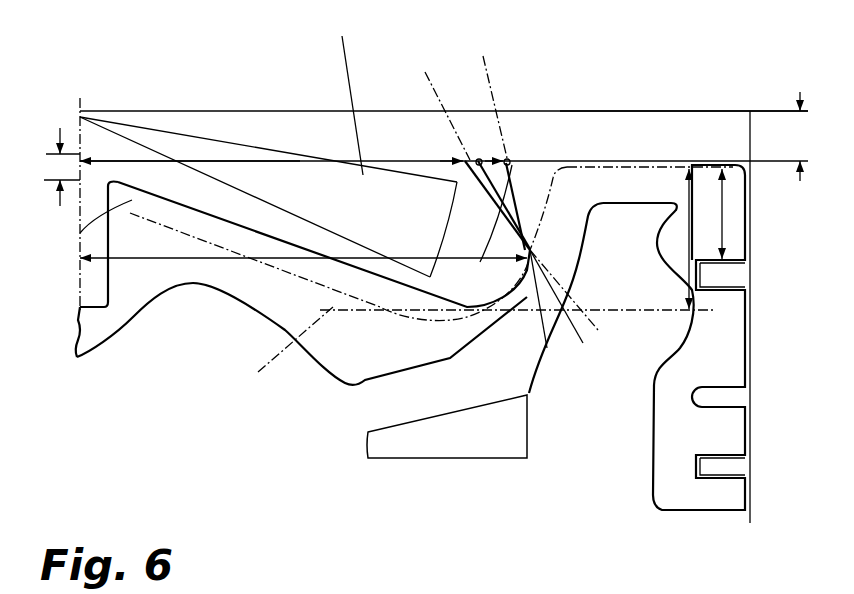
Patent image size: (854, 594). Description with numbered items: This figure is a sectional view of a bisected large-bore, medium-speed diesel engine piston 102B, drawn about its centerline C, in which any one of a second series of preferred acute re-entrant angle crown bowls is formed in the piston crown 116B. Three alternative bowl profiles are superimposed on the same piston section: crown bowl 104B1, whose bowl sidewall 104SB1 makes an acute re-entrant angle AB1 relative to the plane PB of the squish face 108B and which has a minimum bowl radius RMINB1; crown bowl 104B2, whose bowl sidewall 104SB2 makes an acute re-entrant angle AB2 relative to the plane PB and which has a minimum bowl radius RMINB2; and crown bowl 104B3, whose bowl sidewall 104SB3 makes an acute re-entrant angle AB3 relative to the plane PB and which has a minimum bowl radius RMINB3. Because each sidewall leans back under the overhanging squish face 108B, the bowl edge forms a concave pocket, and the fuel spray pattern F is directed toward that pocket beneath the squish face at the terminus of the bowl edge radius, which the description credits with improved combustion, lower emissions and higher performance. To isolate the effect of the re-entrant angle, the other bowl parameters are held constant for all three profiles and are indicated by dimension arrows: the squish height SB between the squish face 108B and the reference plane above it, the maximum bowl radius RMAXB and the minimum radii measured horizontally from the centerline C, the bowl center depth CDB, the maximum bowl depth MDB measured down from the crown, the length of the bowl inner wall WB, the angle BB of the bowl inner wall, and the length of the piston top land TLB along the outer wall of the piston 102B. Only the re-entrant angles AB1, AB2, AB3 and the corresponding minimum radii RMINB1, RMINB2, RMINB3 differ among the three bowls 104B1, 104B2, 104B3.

The piston axis centerline C is at (80, 230).
The plane of the squish face PB is at (302, 351).
The bowl center depth CDB is at (52, 166).
The crown bowl 104B1 is at (268, 137).
The crown bowl 104B2 is at (357, 190).
The fuel spray pattern F is at (347, 94).
The crown bowl 104B3 is at (417, 182).
The minimum bowl radius RMINB2 is at (468, 156).
The minimum bowl radius RMINB3 is at (507, 158).
The minimum bowl radius RMINB1 is at (182, 160).
The squish face 108B is at (642, 160).
The piston crown 116B is at (707, 153).
The squish height SB is at (796, 136).
The bowl sidewall 104SB3 is at (510, 158).
The maximum bowl depth MDB is at (689, 195).
The length of the piston top land TLB is at (724, 190).
The piston 102B is at (749, 238).
The acute re-entrant angle AB1 is at (543, 330).
The acute re-entrant angle AB2 is at (548, 313).
The acute re-entrant angle AB3 is at (530, 297).
The bowl sidewall 104SB1 is at (483, 187).
The bowl sidewall 104SB2 is at (474, 224).
The angle of the bowl inner wall BB is at (148, 201).
The length of the bowl inner wall WB is at (215, 213).
The maximum bowl radius RMAXB is at (233, 250).